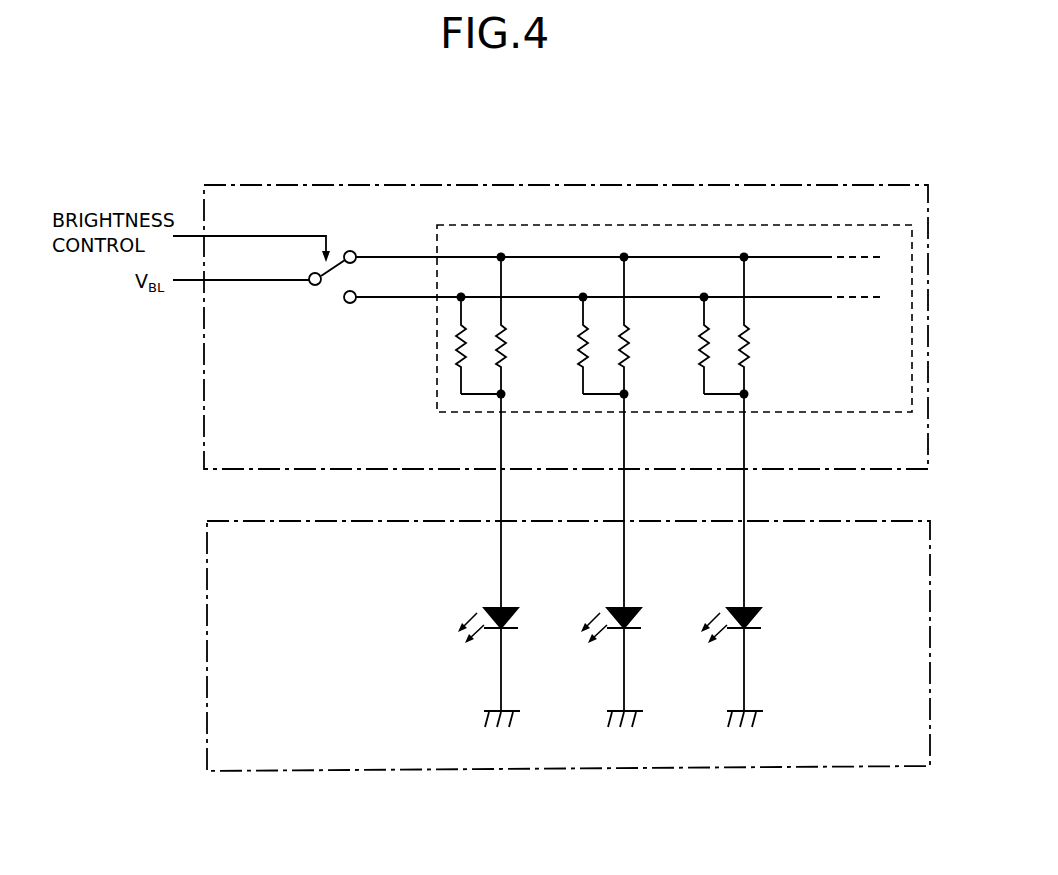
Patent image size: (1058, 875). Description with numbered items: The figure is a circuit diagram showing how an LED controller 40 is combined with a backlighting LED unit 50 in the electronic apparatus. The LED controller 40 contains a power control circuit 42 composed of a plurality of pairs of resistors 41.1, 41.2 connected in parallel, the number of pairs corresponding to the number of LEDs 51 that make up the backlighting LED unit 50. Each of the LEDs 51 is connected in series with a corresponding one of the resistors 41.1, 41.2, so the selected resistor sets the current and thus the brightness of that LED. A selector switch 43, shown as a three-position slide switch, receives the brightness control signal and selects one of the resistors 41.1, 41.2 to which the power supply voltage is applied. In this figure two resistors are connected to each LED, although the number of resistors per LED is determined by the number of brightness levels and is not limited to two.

The LED controller 40 is at (850, 184).
The resistor 41.1 is at (505, 353).
The resistor 41.2 is at (463, 365).
The power control circuit 42 is at (437, 388).
The selector switch 43 is at (332, 294).
The backlighting LED unit 50 is at (897, 767).
The LEDs 51 is at (670, 560).